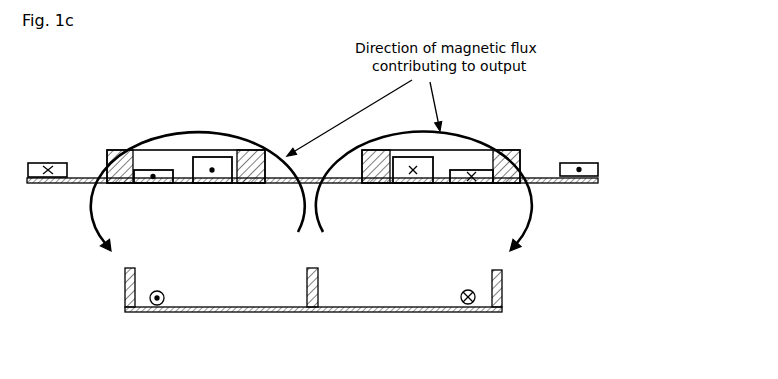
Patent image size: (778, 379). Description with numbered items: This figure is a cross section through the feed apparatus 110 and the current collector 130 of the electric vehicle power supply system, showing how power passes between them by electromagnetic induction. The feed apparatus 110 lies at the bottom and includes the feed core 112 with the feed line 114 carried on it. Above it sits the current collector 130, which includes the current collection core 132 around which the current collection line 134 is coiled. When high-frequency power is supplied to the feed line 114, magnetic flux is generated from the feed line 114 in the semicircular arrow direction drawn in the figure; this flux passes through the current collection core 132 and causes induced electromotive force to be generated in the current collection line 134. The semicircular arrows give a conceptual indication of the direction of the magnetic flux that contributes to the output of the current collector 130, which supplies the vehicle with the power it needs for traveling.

The feed apparatus 110 is at (532, 274).
The feed core 112 is at (231, 306).
The feed line 114 is at (460, 298).
The current collector 130 is at (617, 147).
The current collection core 132 is at (276, 184).
The current collection line 134 is at (470, 176).